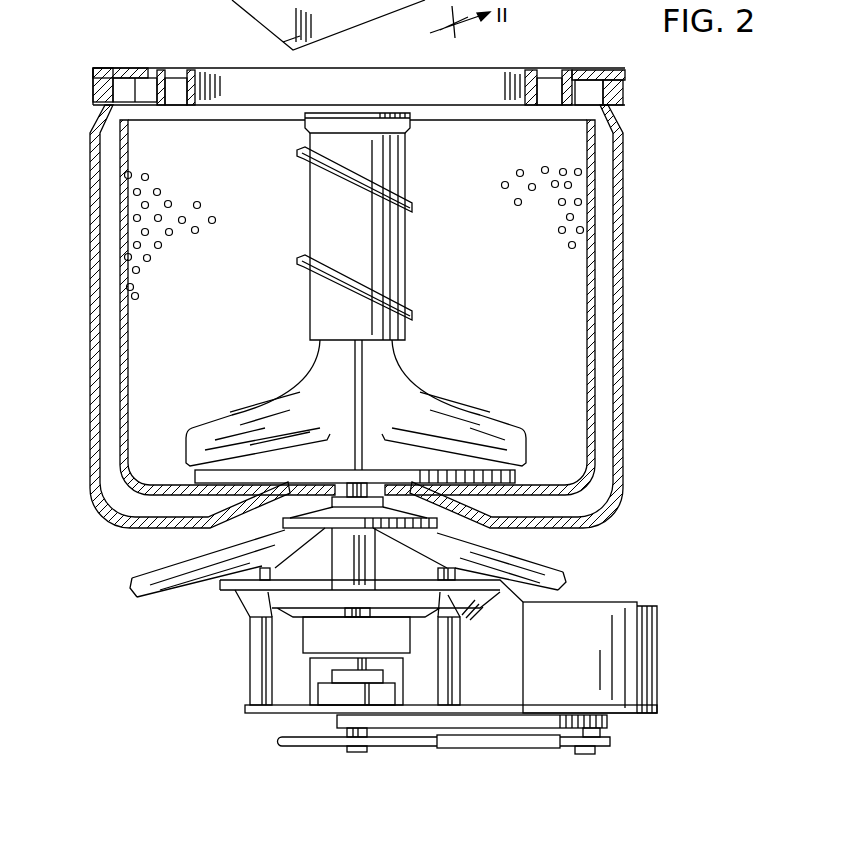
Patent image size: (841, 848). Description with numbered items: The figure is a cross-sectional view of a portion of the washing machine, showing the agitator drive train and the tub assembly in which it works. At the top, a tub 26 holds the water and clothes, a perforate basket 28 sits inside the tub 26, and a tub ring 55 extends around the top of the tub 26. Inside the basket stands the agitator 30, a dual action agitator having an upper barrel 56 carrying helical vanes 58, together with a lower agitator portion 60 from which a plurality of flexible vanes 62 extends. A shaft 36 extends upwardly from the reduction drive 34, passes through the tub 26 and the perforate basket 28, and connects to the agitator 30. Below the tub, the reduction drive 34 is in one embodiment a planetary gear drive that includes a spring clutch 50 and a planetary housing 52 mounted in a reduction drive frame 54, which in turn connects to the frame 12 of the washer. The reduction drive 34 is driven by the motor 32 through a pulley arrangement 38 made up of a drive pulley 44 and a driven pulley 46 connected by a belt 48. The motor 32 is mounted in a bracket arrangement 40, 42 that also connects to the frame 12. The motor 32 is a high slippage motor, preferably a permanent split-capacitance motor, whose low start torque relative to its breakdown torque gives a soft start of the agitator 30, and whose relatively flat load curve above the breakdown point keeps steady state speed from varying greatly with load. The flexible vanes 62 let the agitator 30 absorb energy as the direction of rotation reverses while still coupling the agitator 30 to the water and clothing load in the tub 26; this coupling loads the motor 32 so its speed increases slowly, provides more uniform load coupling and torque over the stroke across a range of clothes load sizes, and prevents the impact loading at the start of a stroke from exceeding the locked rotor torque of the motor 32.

The frame 12 is at (149, 566).
The tub 26 is at (624, 158).
The perforate basket 28 is at (596, 262).
The agitator 30 is at (405, 364).
The motor 32 is at (658, 630).
The reduction drive 34 is at (296, 667).
The shaft 36 is at (346, 492).
The pulley arrangement 38 is at (446, 752).
The bracket arrangement 40 is at (603, 602).
The bracket arrangement 42 is at (608, 722).
The drive pulley 44 is at (572, 754).
The driven pulley 46 is at (293, 748).
The belt 48 is at (483, 749).
The spring clutch 50 is at (383, 677).
The planetary housing 52 is at (312, 633).
The reduction drive frame 54 is at (243, 600).
The tub ring 55 is at (565, 79).
The upper barrel 56 is at (407, 265).
The helical vanes 58 is at (410, 205).
The lower agitator portion 60 is at (515, 481).
The flexible vanes 62 is at (492, 426).